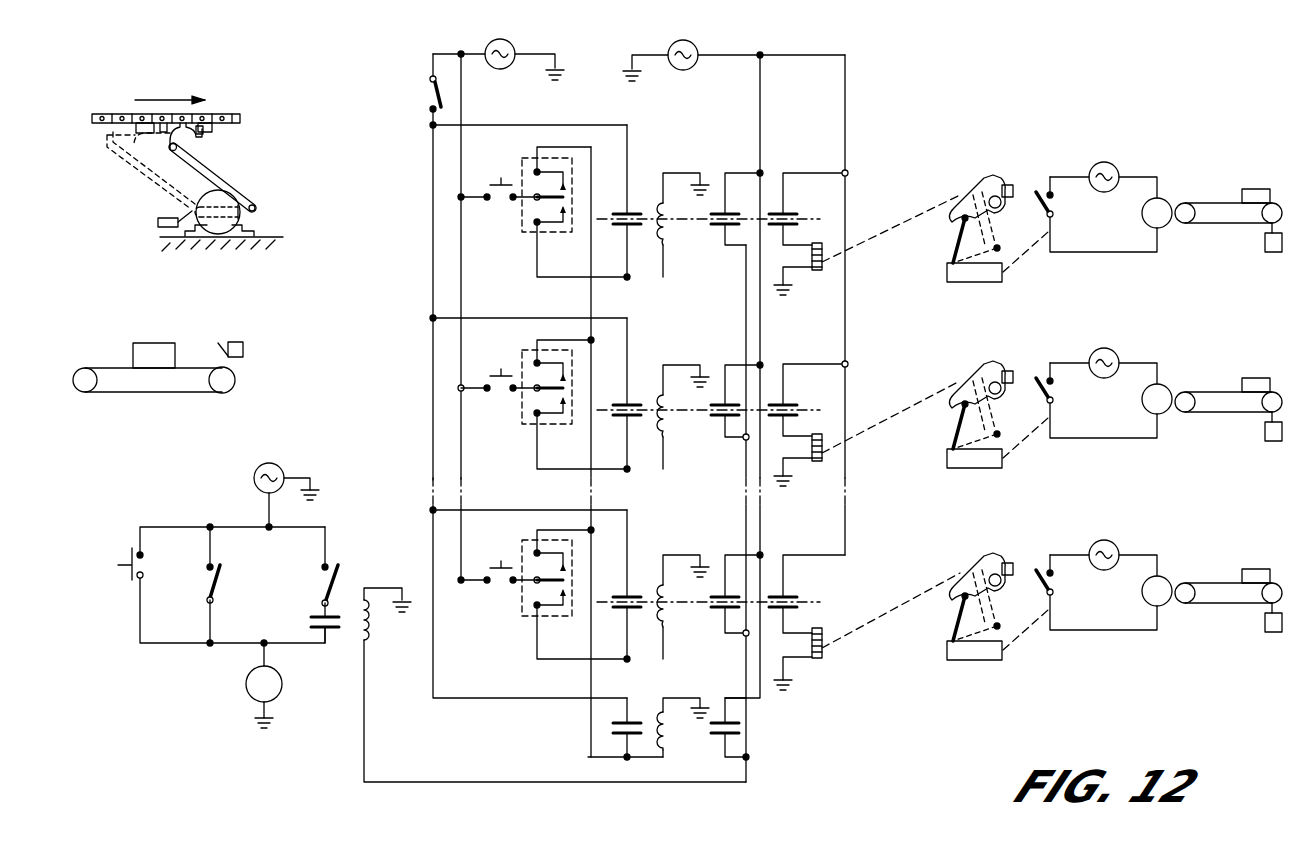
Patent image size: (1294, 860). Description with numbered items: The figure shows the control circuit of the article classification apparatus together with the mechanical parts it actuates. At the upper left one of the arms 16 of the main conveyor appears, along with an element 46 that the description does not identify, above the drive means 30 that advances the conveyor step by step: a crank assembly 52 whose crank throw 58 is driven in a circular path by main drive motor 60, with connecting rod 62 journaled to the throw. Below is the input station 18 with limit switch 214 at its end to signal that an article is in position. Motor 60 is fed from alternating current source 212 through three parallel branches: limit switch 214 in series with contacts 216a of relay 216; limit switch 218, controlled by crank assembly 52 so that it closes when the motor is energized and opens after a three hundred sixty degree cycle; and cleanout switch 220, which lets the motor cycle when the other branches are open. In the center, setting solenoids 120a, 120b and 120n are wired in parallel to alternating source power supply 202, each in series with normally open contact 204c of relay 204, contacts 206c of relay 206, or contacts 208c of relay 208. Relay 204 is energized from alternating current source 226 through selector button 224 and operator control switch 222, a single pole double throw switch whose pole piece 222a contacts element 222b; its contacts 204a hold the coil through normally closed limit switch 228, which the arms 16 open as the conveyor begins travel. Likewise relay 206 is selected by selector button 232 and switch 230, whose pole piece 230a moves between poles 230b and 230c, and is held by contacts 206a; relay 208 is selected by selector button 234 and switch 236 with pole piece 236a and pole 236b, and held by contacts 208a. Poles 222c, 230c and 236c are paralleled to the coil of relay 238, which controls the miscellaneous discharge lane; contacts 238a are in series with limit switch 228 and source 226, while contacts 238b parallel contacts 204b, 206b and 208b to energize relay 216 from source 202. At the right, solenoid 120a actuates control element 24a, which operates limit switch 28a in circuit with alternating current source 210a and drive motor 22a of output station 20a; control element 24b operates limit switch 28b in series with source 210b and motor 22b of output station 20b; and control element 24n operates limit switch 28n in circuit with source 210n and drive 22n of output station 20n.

The arms 16 is at (212, 134).
The input station 18 is at (246, 386).
The output station 20a is at (1232, 186).
The output station 20b is at (1232, 378).
The output station 20n is at (1234, 568).
The drive motor 22a is at (1260, 240).
The motor 22b is at (1260, 426).
The drive 22n is at (1260, 618).
The control element 24a is at (972, 182).
The control element 24b is at (975, 387).
The control element 24n is at (975, 577).
The limit switch 28a is at (1053, 220).
The limit switch 28b is at (1053, 406).
The limit switch 28n is at (1053, 600).
The drive means 30 is at (245, 172).
The chain conveyor 46 is at (215, 115).
The crank assembly 52 is at (262, 220).
The crank throw 58 is at (247, 208).
The main drive motor 60 is at (195, 232).
The connecting rod 62 is at (208, 168).
The setting solenoid 120a is at (817, 270).
The setting solenoid 120b is at (810, 472).
The setting solenoid 120n is at (817, 672).
The alternating source power supply 202 is at (684, 42).
The relay 204 is at (660, 198).
The relay contacts 204a is at (634, 225).
The relay contacts 204b is at (719, 210).
The relay contact 204c is at (788, 210).
The relay 206 is at (660, 392).
The relay contacts 206a is at (636, 420).
The relay contacts 206b is at (719, 403).
The relay contacts 206c is at (788, 403).
The relay 208 is at (660, 583).
The relay contacts 208a is at (634, 614).
The relay contacts 208b is at (719, 595).
The relay contacts 208c is at (782, 595).
The alternating current source 210a is at (1104, 162).
The alternating current source 210b is at (1110, 348).
The alternating current source 210n is at (1110, 551).
The alternating current source 212 is at (256, 470).
The limit switch 214 is at (248, 346).
The relay 216 is at (378, 636).
The relay contacts 216a is at (306, 622).
The limit switch 218 is at (158, 222).
The cleanout switch 220 is at (128, 554).
The operator control switch 222 is at (533, 158).
The pole piece 222a is at (540, 196).
The element 222b is at (577, 222).
The pole 222c is at (550, 181).
The selector button 224 is at (504, 208).
The alternating current source 226 is at (506, 42).
The limit switch 228 is at (165, 118).
The control switch 230 is at (523, 351).
The pole piece 230a is at (540, 388).
The pole 230b is at (577, 414).
The pole 230c is at (544, 374).
The selector button 232 is at (504, 406).
The selector button 234 is at (502, 580).
The control switch 236 is at (523, 543).
The pole piece 236a is at (538, 572).
The pole 236b is at (577, 606).
The pole 236c is at (542, 567).
The relay 238 is at (667, 738).
The relay contacts 238a is at (612, 730).
The relay contacts 238b is at (738, 732).